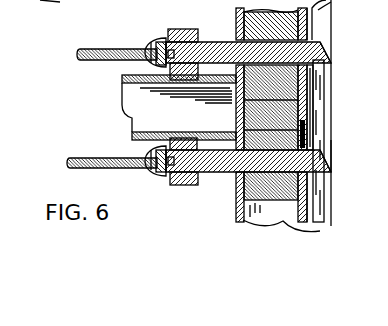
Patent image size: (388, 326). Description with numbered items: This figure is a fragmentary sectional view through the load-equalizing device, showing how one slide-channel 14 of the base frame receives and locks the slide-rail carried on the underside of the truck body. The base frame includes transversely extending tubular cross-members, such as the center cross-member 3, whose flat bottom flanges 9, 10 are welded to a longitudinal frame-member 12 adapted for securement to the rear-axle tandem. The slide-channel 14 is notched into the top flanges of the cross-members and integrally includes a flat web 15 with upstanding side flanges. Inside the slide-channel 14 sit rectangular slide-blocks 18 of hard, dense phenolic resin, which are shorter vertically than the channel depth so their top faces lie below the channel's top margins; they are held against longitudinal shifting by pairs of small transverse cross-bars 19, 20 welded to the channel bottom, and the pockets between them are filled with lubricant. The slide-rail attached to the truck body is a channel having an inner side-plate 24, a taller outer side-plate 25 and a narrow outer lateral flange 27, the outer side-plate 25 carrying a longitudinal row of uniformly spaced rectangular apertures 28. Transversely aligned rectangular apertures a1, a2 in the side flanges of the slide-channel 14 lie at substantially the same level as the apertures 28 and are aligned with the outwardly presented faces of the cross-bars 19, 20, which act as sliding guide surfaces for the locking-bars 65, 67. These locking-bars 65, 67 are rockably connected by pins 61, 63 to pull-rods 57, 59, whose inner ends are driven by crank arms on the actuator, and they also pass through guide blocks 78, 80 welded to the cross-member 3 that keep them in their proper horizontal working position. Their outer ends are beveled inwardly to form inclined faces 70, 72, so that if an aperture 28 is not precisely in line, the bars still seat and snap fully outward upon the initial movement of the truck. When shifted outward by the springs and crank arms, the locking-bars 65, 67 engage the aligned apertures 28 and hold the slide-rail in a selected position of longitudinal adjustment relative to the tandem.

The cross-member 3 is at (122, 86).
The bottom flange 9 is at (150, 113).
The bottom flange 10 is at (238, 13).
The longitudinal frame-member 12 is at (50, 1).
The slide-channel 14 is at (300, 12).
The flat web 15 is at (300, 232).
The slide-block 18 is at (300, 100).
The cross-bar 19 is at (310, 68).
The cross-bar 20 is at (310, 136).
The inner side-plate 24 is at (238, 212).
The outer side-plate 25 is at (318, 188).
The outer lateral flange 27 is at (333, 198).
The apertures 28 is at (322, 14).
The pull-rod 57 is at (68, 167).
The pull-rod 59 is at (89, 48).
The pin 61 is at (152, 174).
The pin 63 is at (146, 40).
The locking-bar 65 is at (212, 167).
The locking-bar 67 is at (331, 42).
The inclined face 70 is at (331, 149).
The inclined face 72 is at (327, 53).
The guide block 78 is at (176, 184).
The guide block 80 is at (180, 29).
The rectangular aperture a1 is at (197, 29).
The rectangular aperture a2 is at (318, 159).